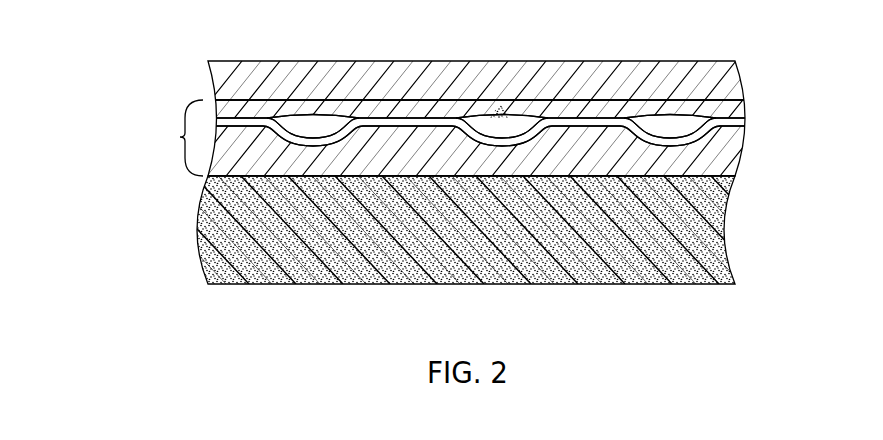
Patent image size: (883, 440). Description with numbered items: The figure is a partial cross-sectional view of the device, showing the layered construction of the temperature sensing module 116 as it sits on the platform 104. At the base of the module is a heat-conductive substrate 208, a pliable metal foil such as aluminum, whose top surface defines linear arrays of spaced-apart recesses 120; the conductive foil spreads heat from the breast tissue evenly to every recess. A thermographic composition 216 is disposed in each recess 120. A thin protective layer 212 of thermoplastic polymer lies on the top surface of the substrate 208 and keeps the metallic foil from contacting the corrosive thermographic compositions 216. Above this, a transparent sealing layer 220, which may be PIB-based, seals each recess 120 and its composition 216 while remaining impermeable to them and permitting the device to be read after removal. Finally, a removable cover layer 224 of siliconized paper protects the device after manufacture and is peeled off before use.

The platform 104 is at (727, 228).
The temperature sensing module 116 is at (180, 137).
The recesses 120 is at (315, 125).
The heat-conductive substrate 208 is at (742, 165).
The protective layer 212 is at (746, 120).
The thermographic composition 216 is at (500, 115).
The transparent sealing layer 220 is at (746, 108).
The removable cover layer 224 is at (238, 72).